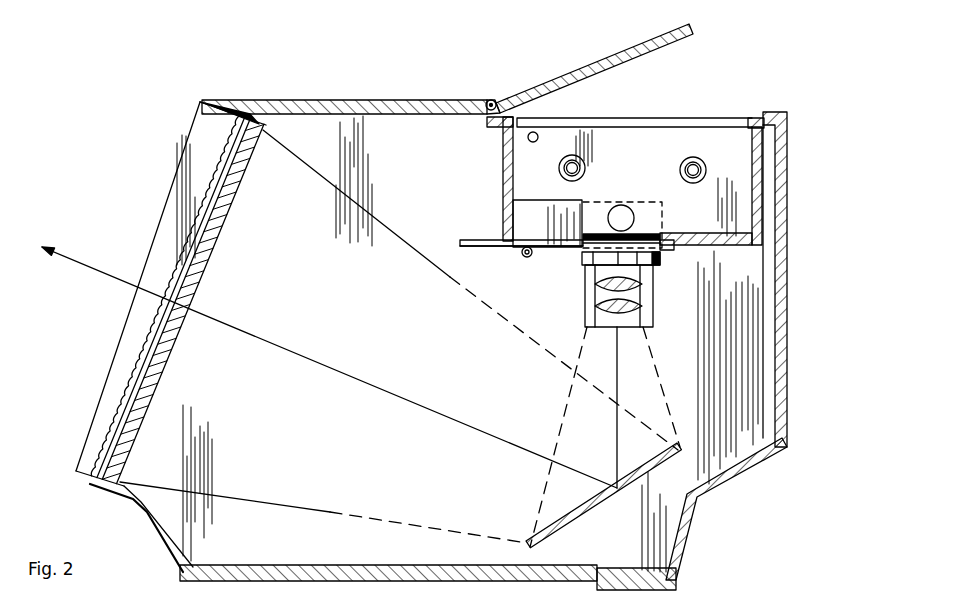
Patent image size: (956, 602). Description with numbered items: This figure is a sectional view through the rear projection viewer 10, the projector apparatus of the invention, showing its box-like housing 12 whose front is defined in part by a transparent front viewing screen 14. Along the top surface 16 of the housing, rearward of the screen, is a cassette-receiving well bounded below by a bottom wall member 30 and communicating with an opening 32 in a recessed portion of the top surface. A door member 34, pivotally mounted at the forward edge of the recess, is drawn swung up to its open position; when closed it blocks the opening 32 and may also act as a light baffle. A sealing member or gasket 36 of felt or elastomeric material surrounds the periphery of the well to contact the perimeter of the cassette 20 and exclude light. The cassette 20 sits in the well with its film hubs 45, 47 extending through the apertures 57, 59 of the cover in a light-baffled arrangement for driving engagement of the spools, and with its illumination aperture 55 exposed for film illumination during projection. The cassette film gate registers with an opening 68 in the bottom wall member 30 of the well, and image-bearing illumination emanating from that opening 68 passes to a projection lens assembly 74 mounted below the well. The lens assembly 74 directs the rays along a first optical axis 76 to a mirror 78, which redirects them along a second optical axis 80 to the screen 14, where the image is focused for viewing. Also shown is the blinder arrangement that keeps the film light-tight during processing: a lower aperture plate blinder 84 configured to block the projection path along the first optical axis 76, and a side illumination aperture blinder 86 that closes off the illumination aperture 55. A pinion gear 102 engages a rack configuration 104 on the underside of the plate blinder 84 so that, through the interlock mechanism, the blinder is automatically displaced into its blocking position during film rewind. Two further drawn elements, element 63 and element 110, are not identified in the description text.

The rear projection viewer 10 is at (264, 96).
The box-like housing 12 is at (126, 497).
The front viewing screen 14 is at (213, 178).
The top surface 16 is at (378, 101).
The cassette 20 is at (638, 117).
The bottom wall member 30 is at (743, 248).
The opening 32 is at (759, 110).
The door member 34 is at (560, 75).
The sealing member or gasket 36 is at (503, 115).
The film hub 45 is at (703, 158).
The film hub 47 is at (587, 172).
The illumination aperture 55 is at (623, 205).
The aperture 57 is at (690, 184).
The aperture 59 is at (584, 160).
The aperture 63 is at (535, 143).
The opening 68 is at (653, 257).
The projection lens assembly 74 is at (587, 307).
The first optical axis 76 is at (617, 434).
The mirror 78 is at (577, 527).
The second optical axis 80 is at (352, 374).
The aperture plate blinder 84 is at (487, 240).
The illumination aperture blinder 86 is at (530, 205).
The pinion gear 102 is at (527, 258).
The rack configuration 104 is at (487, 247).
The bottom wall 110 is at (428, 503).